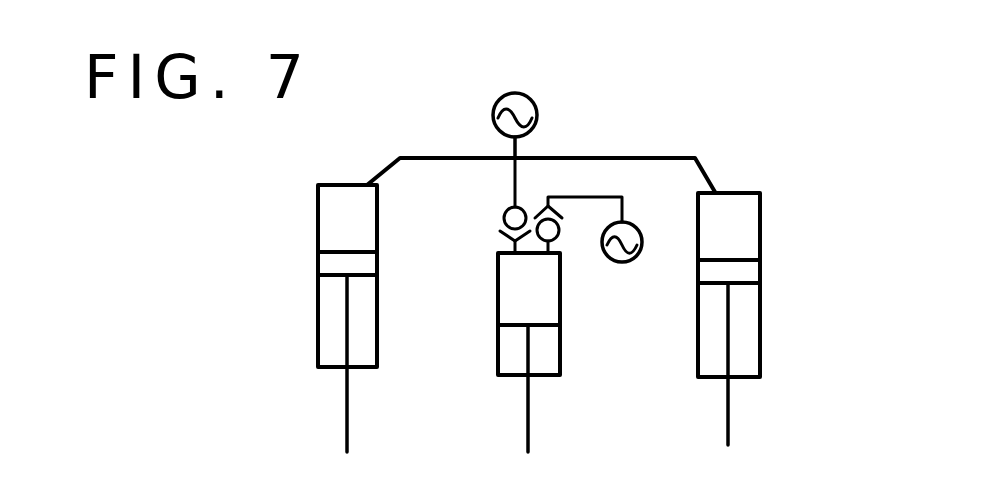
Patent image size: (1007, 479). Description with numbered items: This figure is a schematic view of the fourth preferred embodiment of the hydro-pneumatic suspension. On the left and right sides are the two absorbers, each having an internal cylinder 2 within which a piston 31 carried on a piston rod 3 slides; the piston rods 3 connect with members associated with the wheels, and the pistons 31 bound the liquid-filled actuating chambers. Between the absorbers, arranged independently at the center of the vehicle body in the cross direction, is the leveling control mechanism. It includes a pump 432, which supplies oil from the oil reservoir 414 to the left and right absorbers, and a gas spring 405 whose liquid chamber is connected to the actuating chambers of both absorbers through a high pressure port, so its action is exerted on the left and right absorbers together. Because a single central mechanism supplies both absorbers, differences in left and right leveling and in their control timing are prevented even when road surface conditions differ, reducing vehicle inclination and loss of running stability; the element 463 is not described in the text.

The internal cylinder 2 is at (318, 225).
The piston 31 is at (330, 267).
The piston rod 3 is at (728, 417).
The gas spring 405 is at (497, 100).
The oil reservoir 414 is at (617, 262).
The pump 432 is at (512, 282).
The lower chamber of cylinder 463 is at (532, 355).